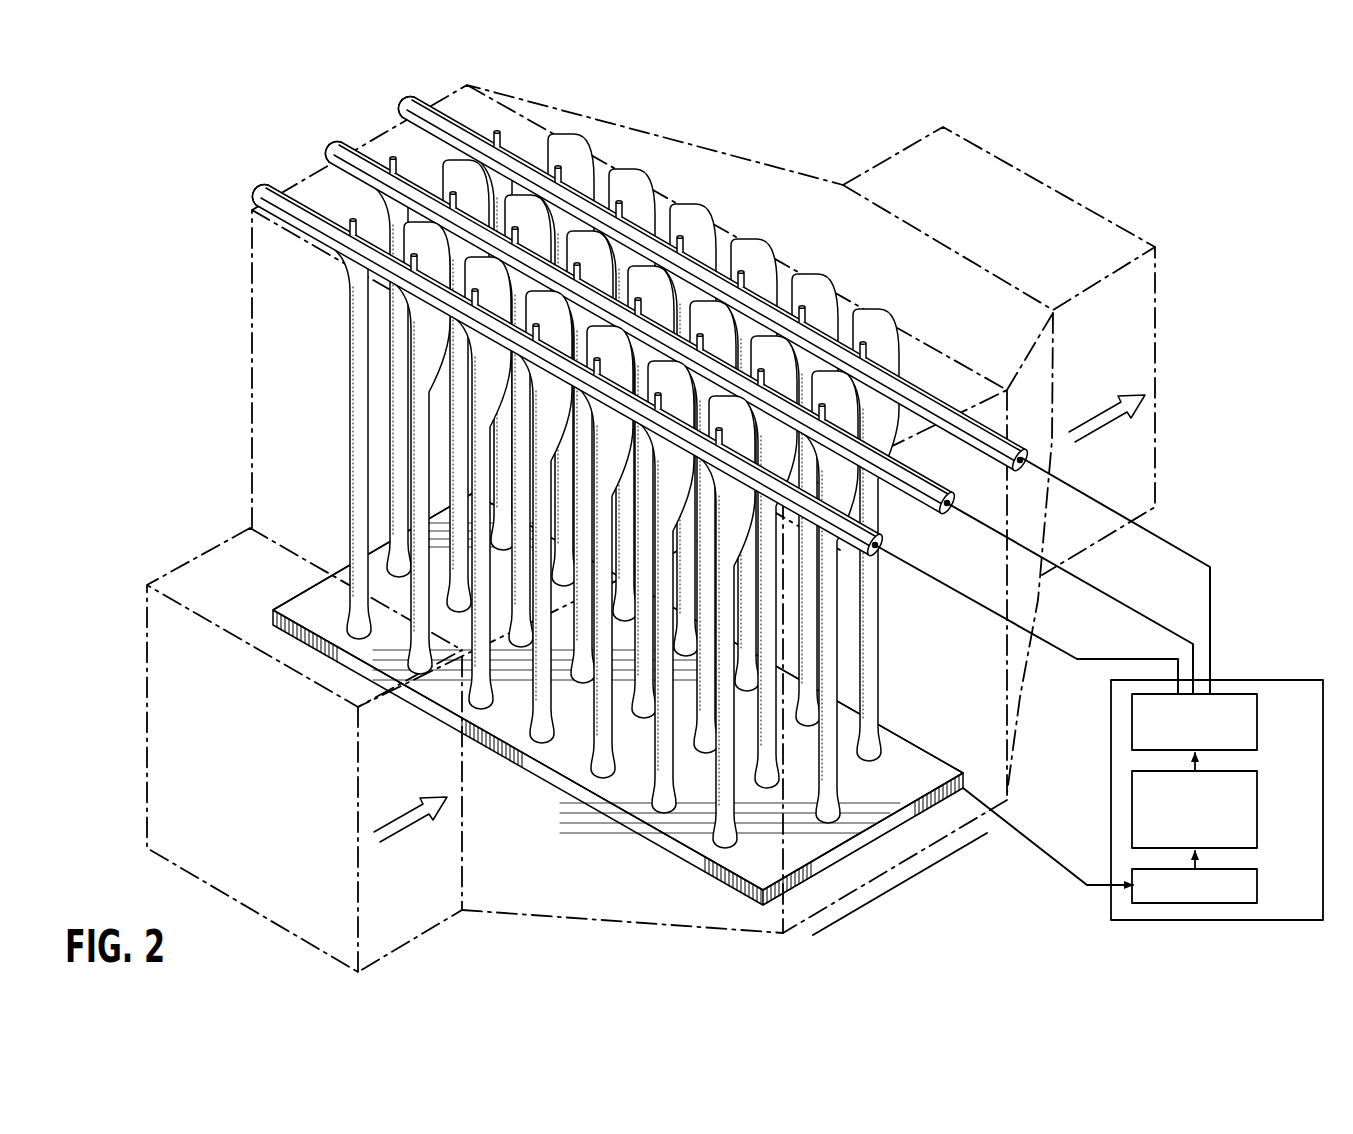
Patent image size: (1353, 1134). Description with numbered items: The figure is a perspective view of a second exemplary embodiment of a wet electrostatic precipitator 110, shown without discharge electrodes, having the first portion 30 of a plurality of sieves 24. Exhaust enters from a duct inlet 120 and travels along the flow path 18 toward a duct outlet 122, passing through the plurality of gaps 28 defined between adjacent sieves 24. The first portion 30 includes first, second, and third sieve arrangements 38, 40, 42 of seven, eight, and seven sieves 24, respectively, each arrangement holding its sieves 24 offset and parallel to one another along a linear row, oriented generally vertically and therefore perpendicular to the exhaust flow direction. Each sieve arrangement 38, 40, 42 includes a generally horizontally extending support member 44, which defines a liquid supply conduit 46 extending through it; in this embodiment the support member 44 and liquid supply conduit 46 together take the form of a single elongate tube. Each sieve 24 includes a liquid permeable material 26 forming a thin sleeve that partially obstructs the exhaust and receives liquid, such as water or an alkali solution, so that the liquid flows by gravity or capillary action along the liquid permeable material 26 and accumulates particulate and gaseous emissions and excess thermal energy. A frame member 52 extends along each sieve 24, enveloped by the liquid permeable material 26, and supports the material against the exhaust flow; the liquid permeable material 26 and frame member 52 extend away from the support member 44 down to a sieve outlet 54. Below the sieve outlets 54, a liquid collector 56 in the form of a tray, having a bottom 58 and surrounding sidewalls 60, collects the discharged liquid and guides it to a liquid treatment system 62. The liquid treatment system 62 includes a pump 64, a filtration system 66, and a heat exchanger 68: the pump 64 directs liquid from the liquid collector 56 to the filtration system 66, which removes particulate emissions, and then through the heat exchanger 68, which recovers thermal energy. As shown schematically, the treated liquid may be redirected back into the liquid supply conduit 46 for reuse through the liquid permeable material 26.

The flow path 18 is at (1100, 415).
The sieve 24 is at (348, 357).
The liquid permeable material 26 is at (352, 416).
The gap 28 is at (380, 478).
The first portion 30 is at (915, 880).
The first sieve arrangement 38 is at (257, 186).
The second sieve arrangement 40 is at (330, 143).
The third sieve arrangement 42 is at (398, 98).
The support member 44 is at (313, 158).
The liquid supply conduit 46 is at (952, 503).
The frame member 52 is at (624, 198).
The sieve outlet 54 is at (356, 637).
The liquid collector 56 is at (533, 773).
The bottom 58 is at (912, 772).
The sidewalls 60 is at (292, 600).
The liquid treatment system 62 is at (1298, 680).
The pump 64 is at (1148, 903).
The filtration system 66 is at (1132, 808).
The heat exchanger 68 is at (1132, 720).
The wet electrostatic precipitator 110 is at (1282, 222).
The duct inlet 120 is at (146, 612).
The duct outlet 122 is at (1160, 292).